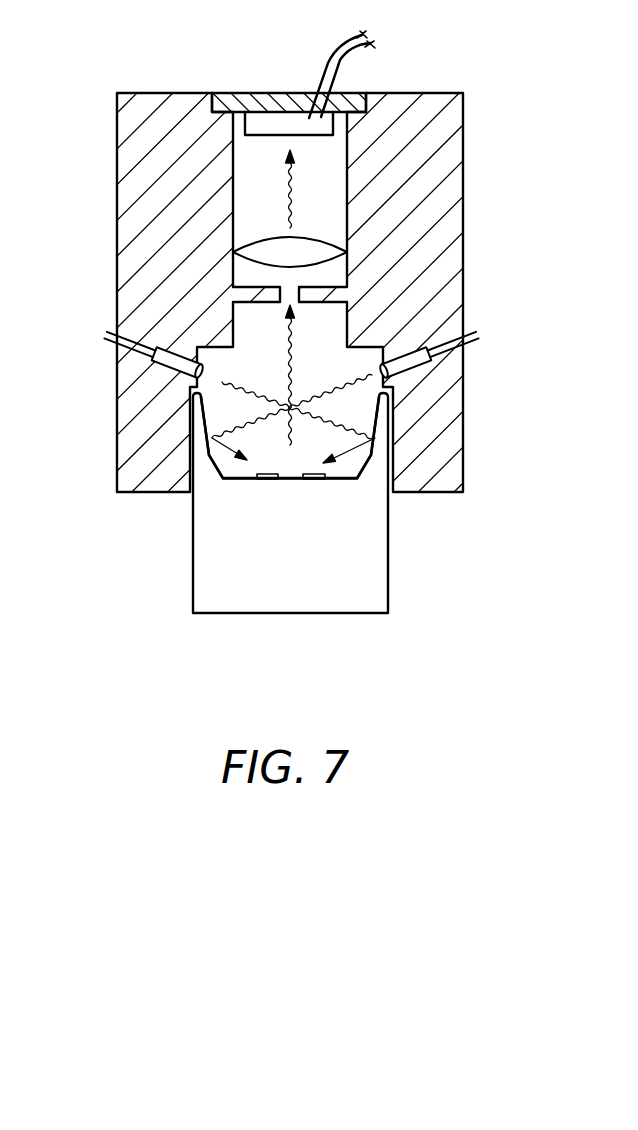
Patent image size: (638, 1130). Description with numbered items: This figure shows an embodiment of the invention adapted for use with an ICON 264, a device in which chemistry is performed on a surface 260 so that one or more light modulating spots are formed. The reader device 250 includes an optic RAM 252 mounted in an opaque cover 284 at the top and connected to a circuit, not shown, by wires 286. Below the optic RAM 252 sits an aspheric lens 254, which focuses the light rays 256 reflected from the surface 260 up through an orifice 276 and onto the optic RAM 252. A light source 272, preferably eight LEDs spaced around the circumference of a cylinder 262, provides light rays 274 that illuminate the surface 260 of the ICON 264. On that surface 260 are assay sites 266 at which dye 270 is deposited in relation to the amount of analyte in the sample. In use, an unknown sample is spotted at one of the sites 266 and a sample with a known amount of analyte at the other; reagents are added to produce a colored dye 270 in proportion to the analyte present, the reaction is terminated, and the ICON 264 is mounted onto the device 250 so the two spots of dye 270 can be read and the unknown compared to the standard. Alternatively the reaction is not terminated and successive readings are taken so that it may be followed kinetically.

The device 250 is at (391, 114).
The optic RAM 252 is at (257, 116).
The aspheric lens 254 is at (315, 243).
The light rays 256 is at (289, 362).
The surface 260 is at (291, 482).
The cylinder 262 is at (455, 182).
The ICON 264 is at (390, 579).
The assay sites 266 is at (264, 481).
The dye 270 is at (345, 476).
The light source 272 is at (163, 348).
The light rays 274 is at (308, 394).
The orifice 276 is at (296, 304).
The opaque cover 284 is at (226, 94).
The wires 286 is at (352, 60).